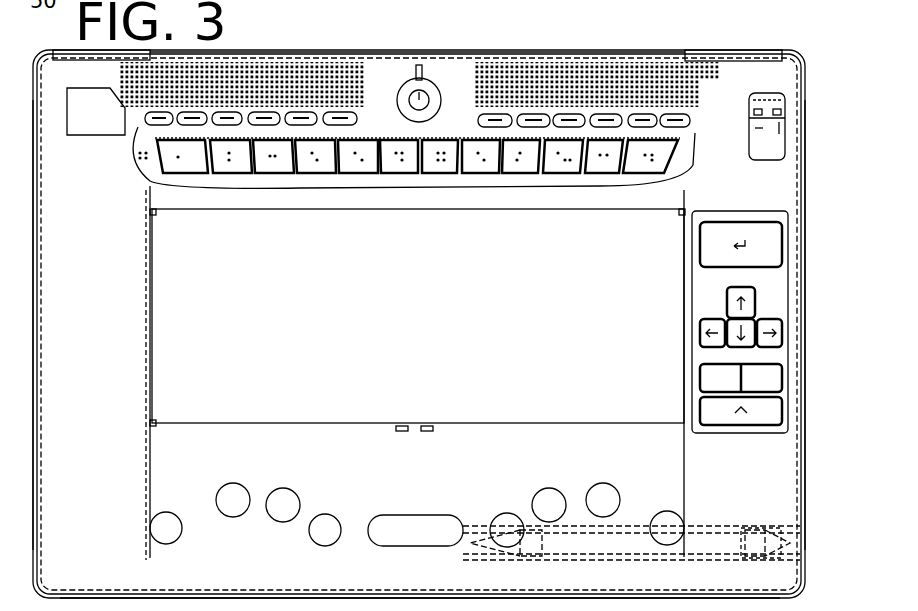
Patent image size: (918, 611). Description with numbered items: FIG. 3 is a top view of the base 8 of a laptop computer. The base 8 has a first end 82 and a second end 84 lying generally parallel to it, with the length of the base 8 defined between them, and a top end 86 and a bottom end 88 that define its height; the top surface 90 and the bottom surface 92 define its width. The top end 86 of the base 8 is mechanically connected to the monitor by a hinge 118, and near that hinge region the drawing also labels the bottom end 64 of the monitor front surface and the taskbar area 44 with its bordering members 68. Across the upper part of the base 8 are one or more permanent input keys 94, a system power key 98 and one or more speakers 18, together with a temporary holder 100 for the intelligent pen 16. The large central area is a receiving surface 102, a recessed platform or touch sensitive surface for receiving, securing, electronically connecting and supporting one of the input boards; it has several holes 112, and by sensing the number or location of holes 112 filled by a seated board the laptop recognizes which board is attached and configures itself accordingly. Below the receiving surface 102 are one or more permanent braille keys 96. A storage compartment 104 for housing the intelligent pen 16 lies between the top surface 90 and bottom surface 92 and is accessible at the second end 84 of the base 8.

The base 8 is at (80, 191).
The intelligent pen 16 is at (701, 545).
The speakers 18 is at (277, 62).
The taskbar area 44 is at (755, 13).
The bottom end 64 is at (666, 7).
The bordering members 68 is at (710, 13).
The first end 82 is at (35, 222).
The second end 84 is at (800, 185).
The top end 86 is at (552, 52).
The bottom end 88 is at (575, 600).
The top surface 90 is at (101, 477).
The bottom surface 92 is at (104, 532).
The permanent input keys 94 is at (67, 92).
The permanent braille keys 96 is at (309, 532).
The system power key 98 is at (405, 100).
The temporary holder 100 is at (752, 142).
The receiving surface 102 is at (152, 283).
The storage compartment 104 is at (770, 526).
The holes 112 is at (154, 214).
The hinge 118 is at (712, 58).